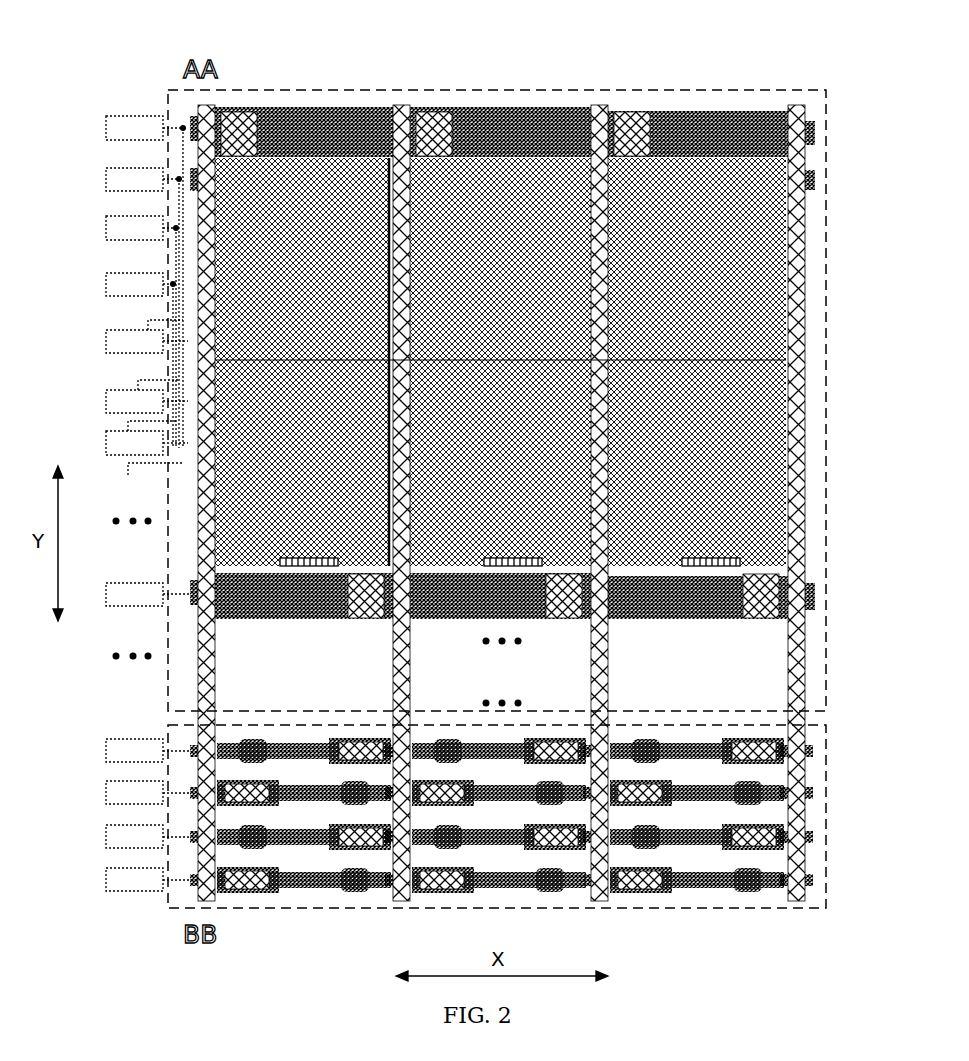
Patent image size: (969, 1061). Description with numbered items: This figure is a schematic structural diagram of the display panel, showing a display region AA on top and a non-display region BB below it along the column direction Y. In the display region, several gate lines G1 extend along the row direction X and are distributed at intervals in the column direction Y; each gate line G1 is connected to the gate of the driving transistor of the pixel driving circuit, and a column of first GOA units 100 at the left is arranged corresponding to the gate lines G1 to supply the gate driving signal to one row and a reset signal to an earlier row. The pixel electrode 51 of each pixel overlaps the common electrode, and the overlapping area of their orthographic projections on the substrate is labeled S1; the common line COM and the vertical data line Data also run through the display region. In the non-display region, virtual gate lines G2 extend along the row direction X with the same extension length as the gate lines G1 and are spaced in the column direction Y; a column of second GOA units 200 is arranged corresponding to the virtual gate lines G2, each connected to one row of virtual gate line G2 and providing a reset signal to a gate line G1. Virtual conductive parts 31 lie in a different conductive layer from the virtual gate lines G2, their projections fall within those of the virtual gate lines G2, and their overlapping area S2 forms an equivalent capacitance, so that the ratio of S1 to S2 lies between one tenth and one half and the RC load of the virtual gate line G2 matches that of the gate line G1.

The first GOA unit 100 is at (98, 575).
The second GOA unit 200 is at (98, 860).
The pixel electrode 51 is at (797, 366).
The virtual conductive part 31 is at (355, 833).
The overlapping area of pixel electrode and common electrode S1 is at (500, 362).
The overlapping area of virtual conductive part and virtual gate line S2 is at (268, 772).
The gate line G1 is at (807, 125).
The virtual gate line G2 is at (805, 785).
The common line COM is at (807, 172).
The data line Data is at (397, 98).